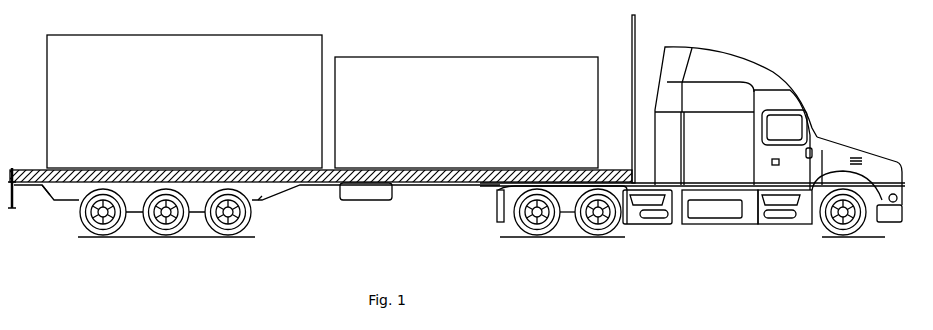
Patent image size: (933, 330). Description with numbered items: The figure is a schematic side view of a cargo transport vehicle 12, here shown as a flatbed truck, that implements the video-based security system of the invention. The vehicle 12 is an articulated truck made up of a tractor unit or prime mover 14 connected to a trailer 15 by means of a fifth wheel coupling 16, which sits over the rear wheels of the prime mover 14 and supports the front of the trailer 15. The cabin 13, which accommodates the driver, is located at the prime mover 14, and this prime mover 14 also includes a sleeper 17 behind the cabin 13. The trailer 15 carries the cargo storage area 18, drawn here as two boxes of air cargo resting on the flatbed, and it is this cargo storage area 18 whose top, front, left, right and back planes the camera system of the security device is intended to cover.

The cargo transport vehicle 12 is at (882, 236).
The cabin 13 is at (790, 133).
The tractor unit or prime mover 14 is at (682, 62).
The trailer 15 is at (438, 181).
The fifth wheel coupling 16 is at (625, 203).
The sleeper 17 is at (710, 147).
The cargo storage area 18 is at (357, 53).